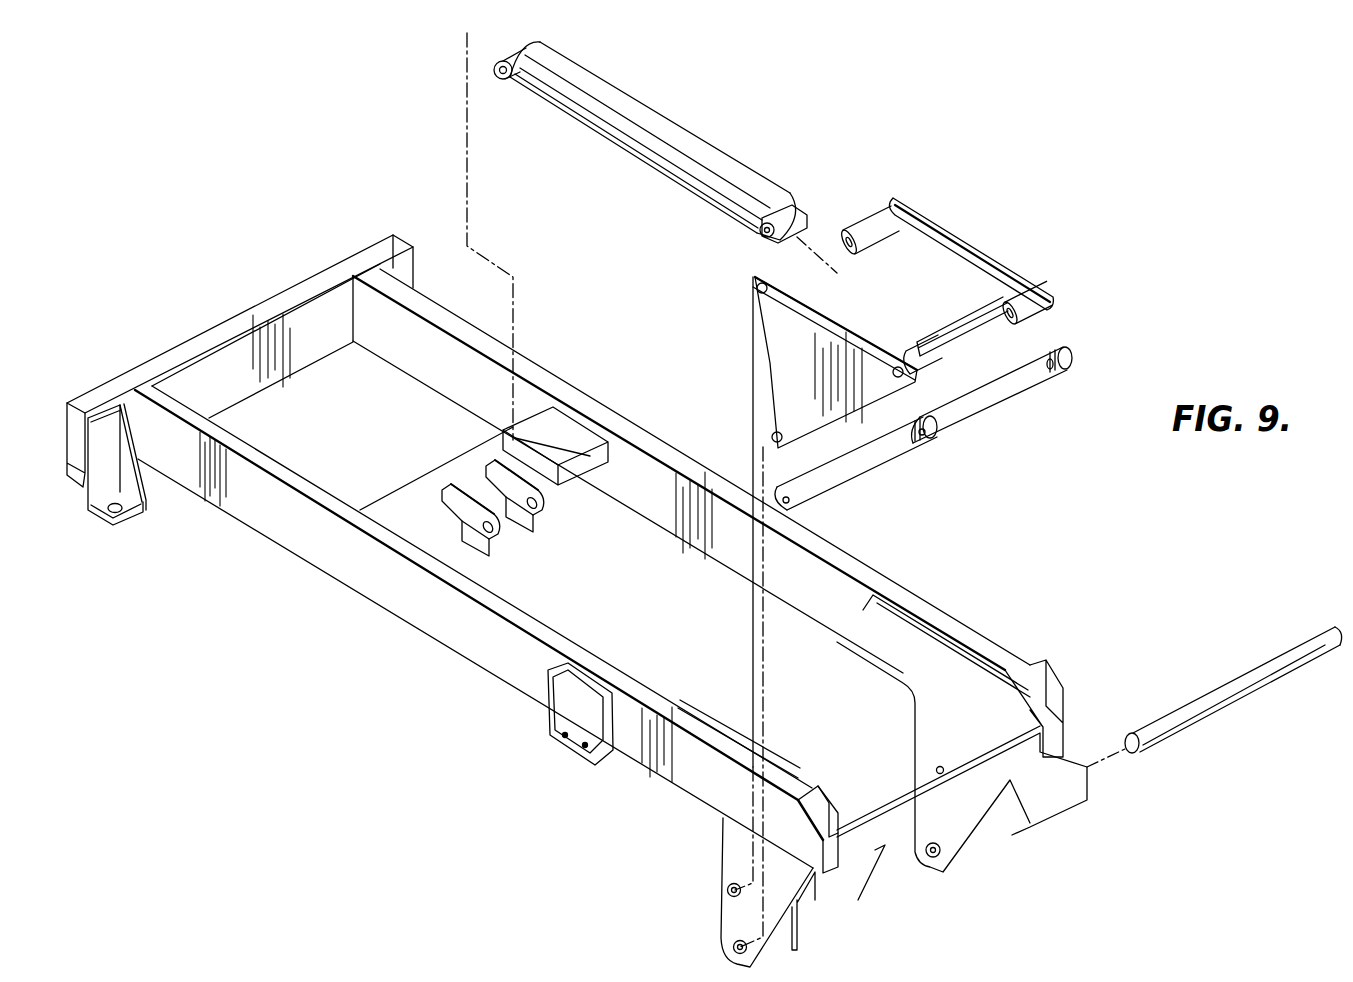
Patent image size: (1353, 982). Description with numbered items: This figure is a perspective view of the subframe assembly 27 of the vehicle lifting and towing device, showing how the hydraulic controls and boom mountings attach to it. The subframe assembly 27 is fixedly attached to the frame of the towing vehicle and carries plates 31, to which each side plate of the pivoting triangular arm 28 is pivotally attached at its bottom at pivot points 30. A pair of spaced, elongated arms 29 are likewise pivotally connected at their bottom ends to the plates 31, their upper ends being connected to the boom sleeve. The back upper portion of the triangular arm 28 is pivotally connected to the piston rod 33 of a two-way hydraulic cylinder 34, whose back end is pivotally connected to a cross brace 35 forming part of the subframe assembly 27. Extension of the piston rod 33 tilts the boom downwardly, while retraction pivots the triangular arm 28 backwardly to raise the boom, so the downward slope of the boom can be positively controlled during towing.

The subframe assembly 27 is at (368, 592).
The triangular arm 28 is at (762, 333).
The elongated arms 29 is at (1013, 398).
The pivot points 30 is at (727, 890).
The plates 31 is at (722, 828).
The piston rod 33 is at (790, 200).
The two-way hydraulic cylinder 34 is at (727, 155).
The cross brace 35 is at (467, 482).